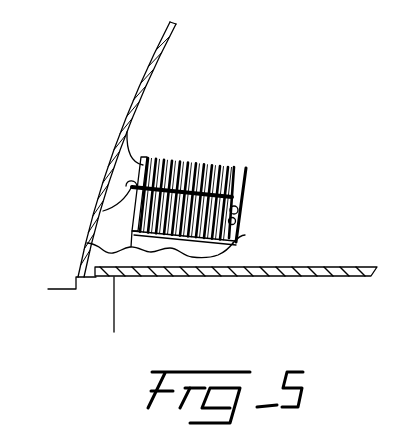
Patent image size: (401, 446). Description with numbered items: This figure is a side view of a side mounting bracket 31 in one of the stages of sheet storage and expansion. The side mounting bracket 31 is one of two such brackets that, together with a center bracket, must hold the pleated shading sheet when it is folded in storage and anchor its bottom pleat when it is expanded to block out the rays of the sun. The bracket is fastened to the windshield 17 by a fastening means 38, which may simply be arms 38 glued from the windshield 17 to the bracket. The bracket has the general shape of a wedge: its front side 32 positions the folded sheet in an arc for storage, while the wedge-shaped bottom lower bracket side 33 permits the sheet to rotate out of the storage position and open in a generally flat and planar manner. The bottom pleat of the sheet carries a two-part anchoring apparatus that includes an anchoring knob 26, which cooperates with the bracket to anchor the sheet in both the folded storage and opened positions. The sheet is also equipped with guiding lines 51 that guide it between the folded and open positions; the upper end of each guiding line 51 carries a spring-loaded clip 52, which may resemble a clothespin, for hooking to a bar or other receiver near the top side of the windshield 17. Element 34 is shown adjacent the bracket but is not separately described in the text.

The windshield 17 is at (126, 117).
The anchoring knob 26 is at (103, 211).
The side mounting bracket 31 is at (173, 248).
The front side 32 is at (126, 186).
The bottom lower bracket side 33 is at (87, 243).
The sheet end 34 is at (245, 235).
The arms 38 is at (123, 170).
The guiding lines 51 is at (188, 160).
The spring-loaded clips 52 is at (248, 182).